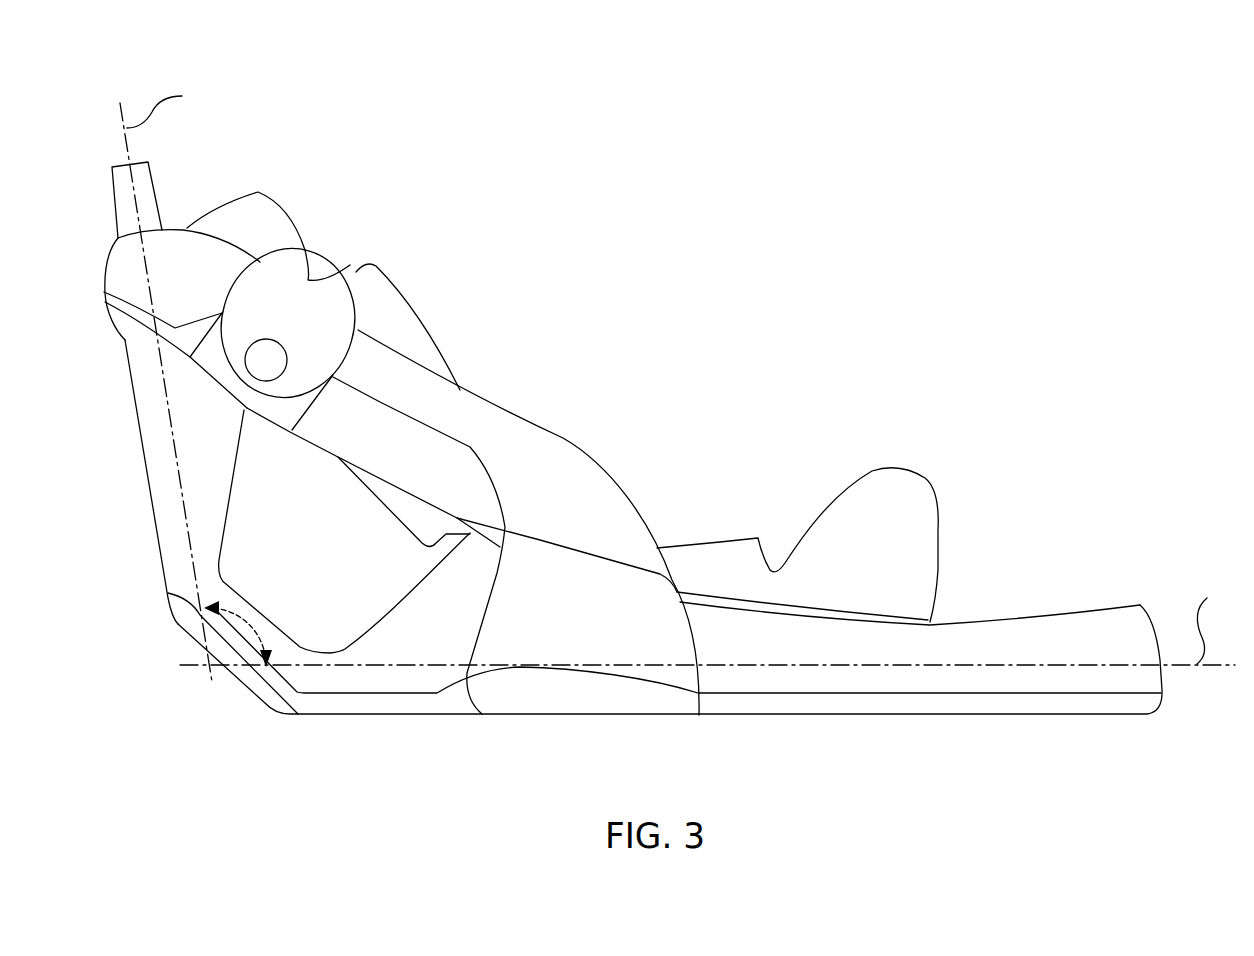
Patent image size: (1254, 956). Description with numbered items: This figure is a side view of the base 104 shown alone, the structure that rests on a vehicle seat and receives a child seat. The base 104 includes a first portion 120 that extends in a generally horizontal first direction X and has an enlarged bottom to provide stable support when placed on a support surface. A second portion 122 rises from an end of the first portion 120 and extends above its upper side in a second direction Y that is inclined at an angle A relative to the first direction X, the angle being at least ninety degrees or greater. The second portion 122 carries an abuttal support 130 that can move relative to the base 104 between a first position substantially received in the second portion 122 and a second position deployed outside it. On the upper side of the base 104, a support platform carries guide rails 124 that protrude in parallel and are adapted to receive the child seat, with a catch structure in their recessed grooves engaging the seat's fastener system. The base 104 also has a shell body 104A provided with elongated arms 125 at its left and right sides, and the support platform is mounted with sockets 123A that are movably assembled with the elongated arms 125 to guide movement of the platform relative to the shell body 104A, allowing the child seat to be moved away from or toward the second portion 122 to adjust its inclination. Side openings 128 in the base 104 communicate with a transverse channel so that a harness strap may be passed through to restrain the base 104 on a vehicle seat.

The base 104 is at (830, 73).
The abuttal support 130 is at (122, 175).
The second portion 122 is at (146, 412).
The side openings 128 is at (258, 468).
The socket 123A is at (308, 281).
The elongated arm 125 is at (549, 445).
The guide rail 124 is at (895, 487).
The shell body 104A is at (1033, 627).
The first portion 120 is at (827, 703).